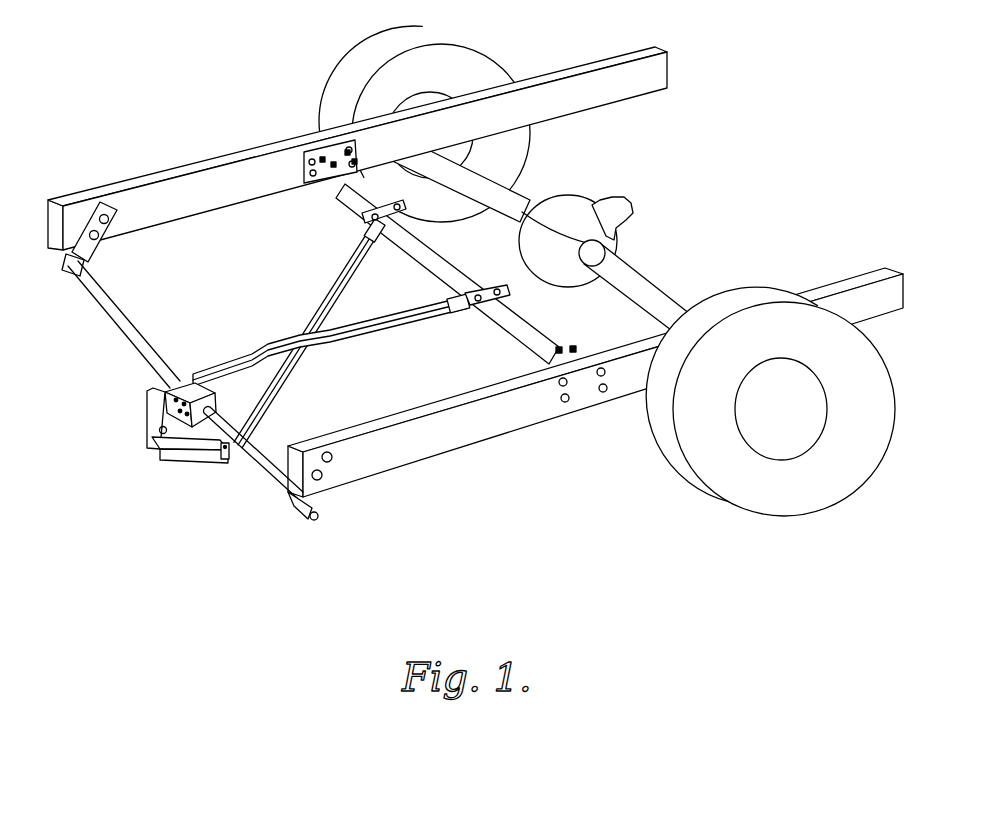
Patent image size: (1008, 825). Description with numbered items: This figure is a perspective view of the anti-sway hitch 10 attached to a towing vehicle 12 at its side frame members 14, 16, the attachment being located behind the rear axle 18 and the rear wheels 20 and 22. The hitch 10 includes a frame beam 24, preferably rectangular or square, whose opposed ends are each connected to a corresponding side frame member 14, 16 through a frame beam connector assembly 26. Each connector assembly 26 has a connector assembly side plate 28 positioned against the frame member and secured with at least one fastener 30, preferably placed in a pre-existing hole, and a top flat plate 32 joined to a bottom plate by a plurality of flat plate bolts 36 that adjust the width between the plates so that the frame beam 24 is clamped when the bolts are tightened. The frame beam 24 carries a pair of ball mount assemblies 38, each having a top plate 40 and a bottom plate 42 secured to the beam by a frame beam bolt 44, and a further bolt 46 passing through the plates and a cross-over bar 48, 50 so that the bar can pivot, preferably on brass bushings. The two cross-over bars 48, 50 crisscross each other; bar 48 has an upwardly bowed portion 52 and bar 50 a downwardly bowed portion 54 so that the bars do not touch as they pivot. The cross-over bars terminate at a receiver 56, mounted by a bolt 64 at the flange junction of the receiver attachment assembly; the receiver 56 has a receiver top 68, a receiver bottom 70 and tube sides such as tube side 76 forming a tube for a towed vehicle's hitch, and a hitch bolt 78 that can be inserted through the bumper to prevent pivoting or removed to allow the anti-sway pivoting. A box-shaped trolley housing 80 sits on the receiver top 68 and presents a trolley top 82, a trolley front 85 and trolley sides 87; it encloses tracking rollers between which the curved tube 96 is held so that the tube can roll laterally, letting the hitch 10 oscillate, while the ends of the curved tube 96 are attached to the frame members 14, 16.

The hitch 10 is at (242, 258).
The towing vehicle 12 is at (770, 150).
The side frame member 14 is at (160, 187).
The side frame member 16 is at (460, 440).
The rear axle 18 is at (520, 197).
The rear wheel 20 is at (478, 47).
The rear wheel 22 is at (813, 490).
The frame beam 24 is at (466, 268).
The frame beam connector assembly 26 is at (303, 203).
The connector assembly side plate 28 is at (306, 150).
The fastener 30 is at (305, 172).
The top flat plate 32 is at (324, 157).
The flat plate bolts 36 is at (356, 162).
The ball mount assembly 38 is at (386, 252).
The top plate 40 is at (390, 205).
The bottom plate 42 is at (350, 258).
The frame beam bolt 44 is at (437, 221).
The bolt 46 is at (364, 216).
The cross-over bar 48 is at (347, 346).
The cross-over bar 50 is at (276, 391).
The upwardly bowed portion 52 is at (284, 323).
The downwardly bowed portion 54 is at (356, 304).
The receiver 56 is at (130, 434).
The bolt 64 is at (226, 452).
The receiver top 68 is at (192, 445).
The receiver bottom 70 is at (211, 462).
The tube side 76 is at (163, 450).
The hitch bolt 78 is at (160, 433).
The trolley housing 80 is at (183, 372).
The trolley top 82 is at (203, 378).
The trolley front 85 is at (177, 413).
The trolley side 87 is at (213, 408).
The curved tube 96 is at (88, 283).